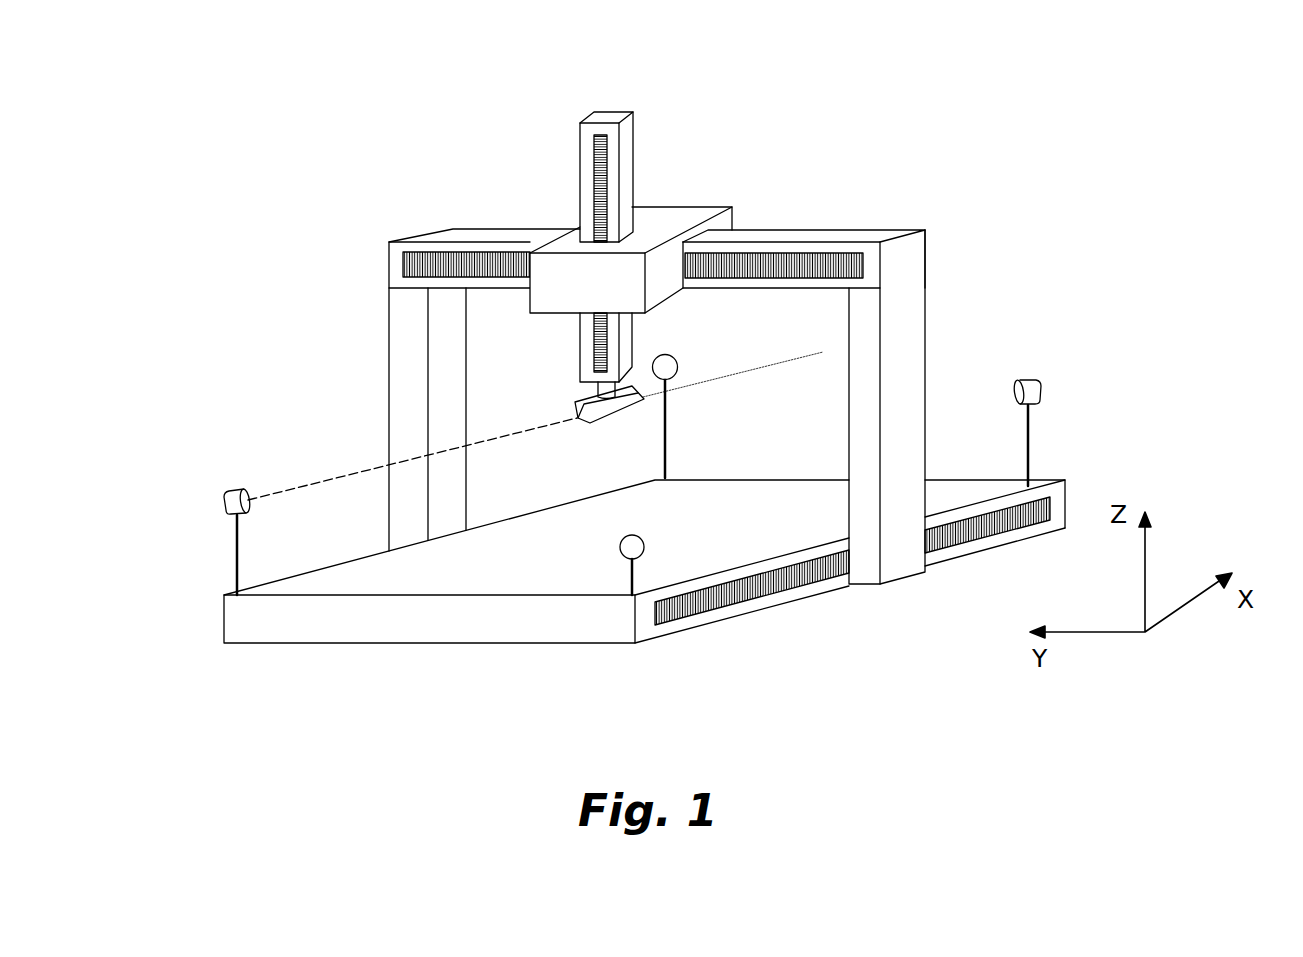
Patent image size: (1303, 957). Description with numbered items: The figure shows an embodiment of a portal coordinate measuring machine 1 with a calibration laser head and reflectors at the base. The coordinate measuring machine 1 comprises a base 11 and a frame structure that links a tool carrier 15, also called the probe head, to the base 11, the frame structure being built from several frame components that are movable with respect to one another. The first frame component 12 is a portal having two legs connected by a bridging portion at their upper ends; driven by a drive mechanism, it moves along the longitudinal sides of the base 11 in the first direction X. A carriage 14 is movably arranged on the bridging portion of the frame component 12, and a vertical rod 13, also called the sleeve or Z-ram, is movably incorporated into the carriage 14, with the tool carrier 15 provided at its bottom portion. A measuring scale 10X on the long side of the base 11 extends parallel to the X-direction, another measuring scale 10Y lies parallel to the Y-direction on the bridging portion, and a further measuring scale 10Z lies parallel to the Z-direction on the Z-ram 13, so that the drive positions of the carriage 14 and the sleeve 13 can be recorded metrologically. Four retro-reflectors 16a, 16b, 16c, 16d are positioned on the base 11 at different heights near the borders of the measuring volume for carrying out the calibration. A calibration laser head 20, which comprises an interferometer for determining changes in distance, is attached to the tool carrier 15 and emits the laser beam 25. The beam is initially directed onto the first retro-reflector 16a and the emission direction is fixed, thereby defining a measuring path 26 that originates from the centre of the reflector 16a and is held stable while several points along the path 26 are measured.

The portal coordinate measuring machine 1 is at (328, 102).
The measuring scale 10X is at (715, 605).
The measuring scale 10Y is at (437, 265).
The measuring scale 10Z is at (600, 177).
The base 11 is at (580, 628).
The first frame component 12 is at (912, 330).
The vertical rod 13 is at (624, 137).
The carriage 14 is at (708, 213).
The tool carrier 15 is at (598, 392).
The retro-reflector 16a is at (230, 498).
The retro-reflector 16b is at (626, 547).
The retro-reflector 16c is at (1030, 388).
The retro-reflector 16d is at (662, 360).
The calibration laser head 20 is at (603, 410).
The laser beam 25 is at (370, 467).
The measuring path 26 is at (717, 379).